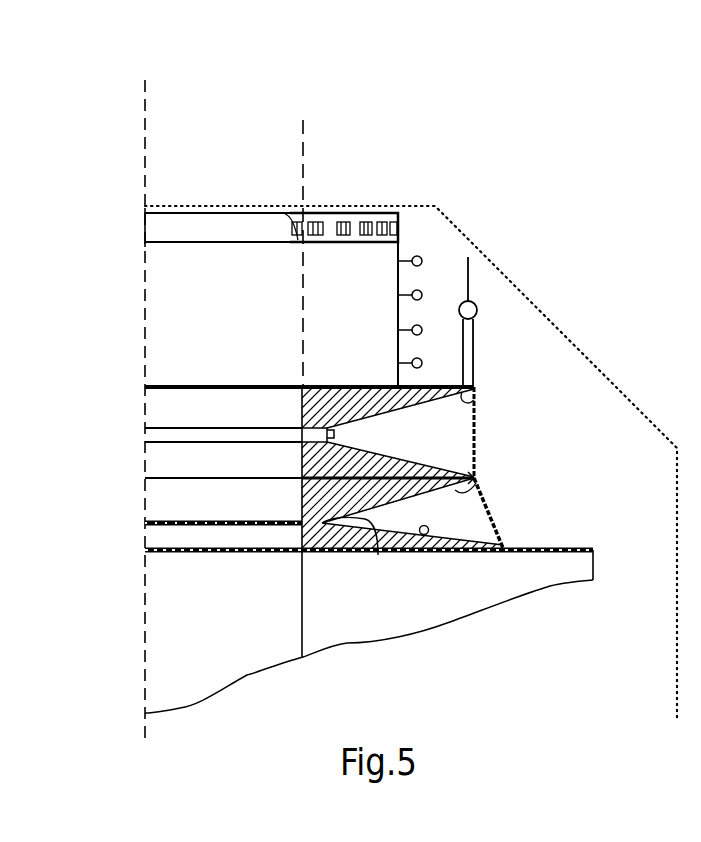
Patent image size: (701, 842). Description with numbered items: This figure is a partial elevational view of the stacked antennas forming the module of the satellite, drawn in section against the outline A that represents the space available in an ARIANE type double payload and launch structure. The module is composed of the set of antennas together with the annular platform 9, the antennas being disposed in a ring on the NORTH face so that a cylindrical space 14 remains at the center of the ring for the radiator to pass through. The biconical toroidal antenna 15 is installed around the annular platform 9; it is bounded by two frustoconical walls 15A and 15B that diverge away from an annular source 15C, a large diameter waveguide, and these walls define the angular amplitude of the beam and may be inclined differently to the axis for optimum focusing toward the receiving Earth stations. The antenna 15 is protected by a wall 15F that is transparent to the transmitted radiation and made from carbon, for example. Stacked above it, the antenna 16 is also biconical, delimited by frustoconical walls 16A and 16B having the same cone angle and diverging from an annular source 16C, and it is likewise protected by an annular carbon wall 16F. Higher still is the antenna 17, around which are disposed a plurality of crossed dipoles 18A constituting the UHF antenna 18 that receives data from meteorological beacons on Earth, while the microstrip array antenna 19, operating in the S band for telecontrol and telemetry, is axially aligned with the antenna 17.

The annular platform 9 is at (568, 553).
The cylindrical space 14 is at (298, 296).
The biconical toroidal antenna 15 is at (483, 544).
The frustoconical wall 15A is at (438, 516).
The frustoconical wall 15B is at (476, 483).
The annular source 15C is at (378, 555).
The protective wall 15F is at (503, 537).
The biconical antenna 16 is at (467, 403).
The frustoconical wall 16A is at (523, 467).
The frustoconical wall 16B is at (470, 402).
The annular source 16C is at (337, 428).
The annular protective wall 16F is at (474, 428).
The antenna 17 is at (403, 347).
The UHF antenna 18 is at (476, 333).
The crossed dipoles 18A is at (468, 282).
The microstrip array antenna 19 is at (398, 219).
The outline A is at (562, 332).